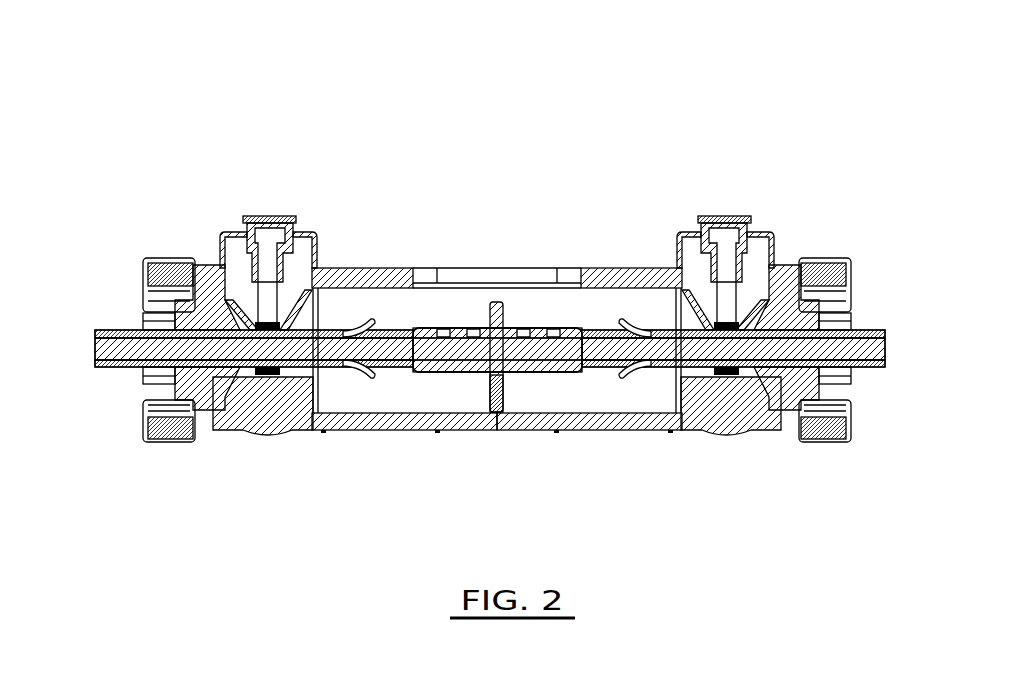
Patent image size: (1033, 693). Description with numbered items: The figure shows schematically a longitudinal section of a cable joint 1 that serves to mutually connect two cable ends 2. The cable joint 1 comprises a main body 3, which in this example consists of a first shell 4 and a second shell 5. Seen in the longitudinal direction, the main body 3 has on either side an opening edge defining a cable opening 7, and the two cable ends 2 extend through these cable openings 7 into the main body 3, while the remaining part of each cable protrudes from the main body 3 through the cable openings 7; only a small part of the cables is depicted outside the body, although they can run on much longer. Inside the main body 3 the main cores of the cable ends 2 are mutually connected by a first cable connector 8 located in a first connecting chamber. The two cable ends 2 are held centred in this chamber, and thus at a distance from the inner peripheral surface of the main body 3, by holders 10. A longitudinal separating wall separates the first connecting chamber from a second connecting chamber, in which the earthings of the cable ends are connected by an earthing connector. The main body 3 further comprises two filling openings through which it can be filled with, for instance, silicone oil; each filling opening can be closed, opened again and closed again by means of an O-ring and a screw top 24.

The cable joint 1 is at (110, 140).
The cable ends 2 is at (103, 336).
The main body 3 is at (462, 132).
The first shell 4 is at (570, 268).
The second shell 5 is at (629, 425).
The cable opening 7 is at (130, 390).
The first cable connector 8 is at (470, 370).
The holders 10 is at (495, 314).
The screw top 24 is at (268, 212).